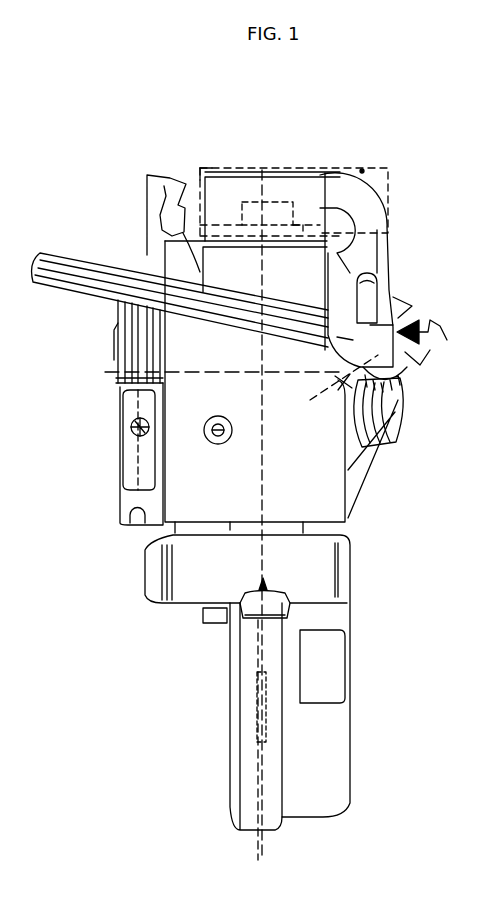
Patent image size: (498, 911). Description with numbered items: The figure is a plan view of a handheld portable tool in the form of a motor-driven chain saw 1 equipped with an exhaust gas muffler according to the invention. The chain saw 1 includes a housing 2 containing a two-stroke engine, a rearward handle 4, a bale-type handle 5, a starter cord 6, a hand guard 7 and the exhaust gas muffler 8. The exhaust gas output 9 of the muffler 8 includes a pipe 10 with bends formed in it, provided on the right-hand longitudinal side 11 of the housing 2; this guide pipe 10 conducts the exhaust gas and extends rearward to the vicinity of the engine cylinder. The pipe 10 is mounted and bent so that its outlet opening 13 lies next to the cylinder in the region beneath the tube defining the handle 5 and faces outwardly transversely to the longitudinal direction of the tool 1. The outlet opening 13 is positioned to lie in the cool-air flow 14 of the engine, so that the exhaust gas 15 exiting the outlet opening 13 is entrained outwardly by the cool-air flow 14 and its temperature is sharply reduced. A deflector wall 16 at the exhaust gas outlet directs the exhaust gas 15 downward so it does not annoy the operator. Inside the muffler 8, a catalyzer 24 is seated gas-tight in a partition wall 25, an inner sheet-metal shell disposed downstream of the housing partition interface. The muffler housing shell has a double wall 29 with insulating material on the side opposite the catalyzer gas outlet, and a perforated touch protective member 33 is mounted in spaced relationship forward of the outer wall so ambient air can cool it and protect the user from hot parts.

The chain saw 1 is at (97, 645).
The housing 2 is at (350, 518).
The rearward handle 4 is at (240, 778).
The bale-type handle 5 is at (217, 336).
The starter cord 6 is at (135, 475).
The hand guard 7 is at (165, 212).
The exhaust gas muffler 8 is at (233, 180).
The exhaust gas output 9 is at (363, 170).
The pipe 10 is at (375, 243).
The right-hand longitudinal side 11 is at (355, 470).
The outlet opening 13 is at (405, 360).
The cool-air flow 14 is at (435, 332).
The exhaust gas 15 is at (418, 312).
The deflector wall 16 is at (408, 385).
The catalyzer 24 is at (254, 204).
The partition wall 25 is at (303, 225).
The double wall 29 is at (205, 172).
The touch protective member 33 is at (385, 170).